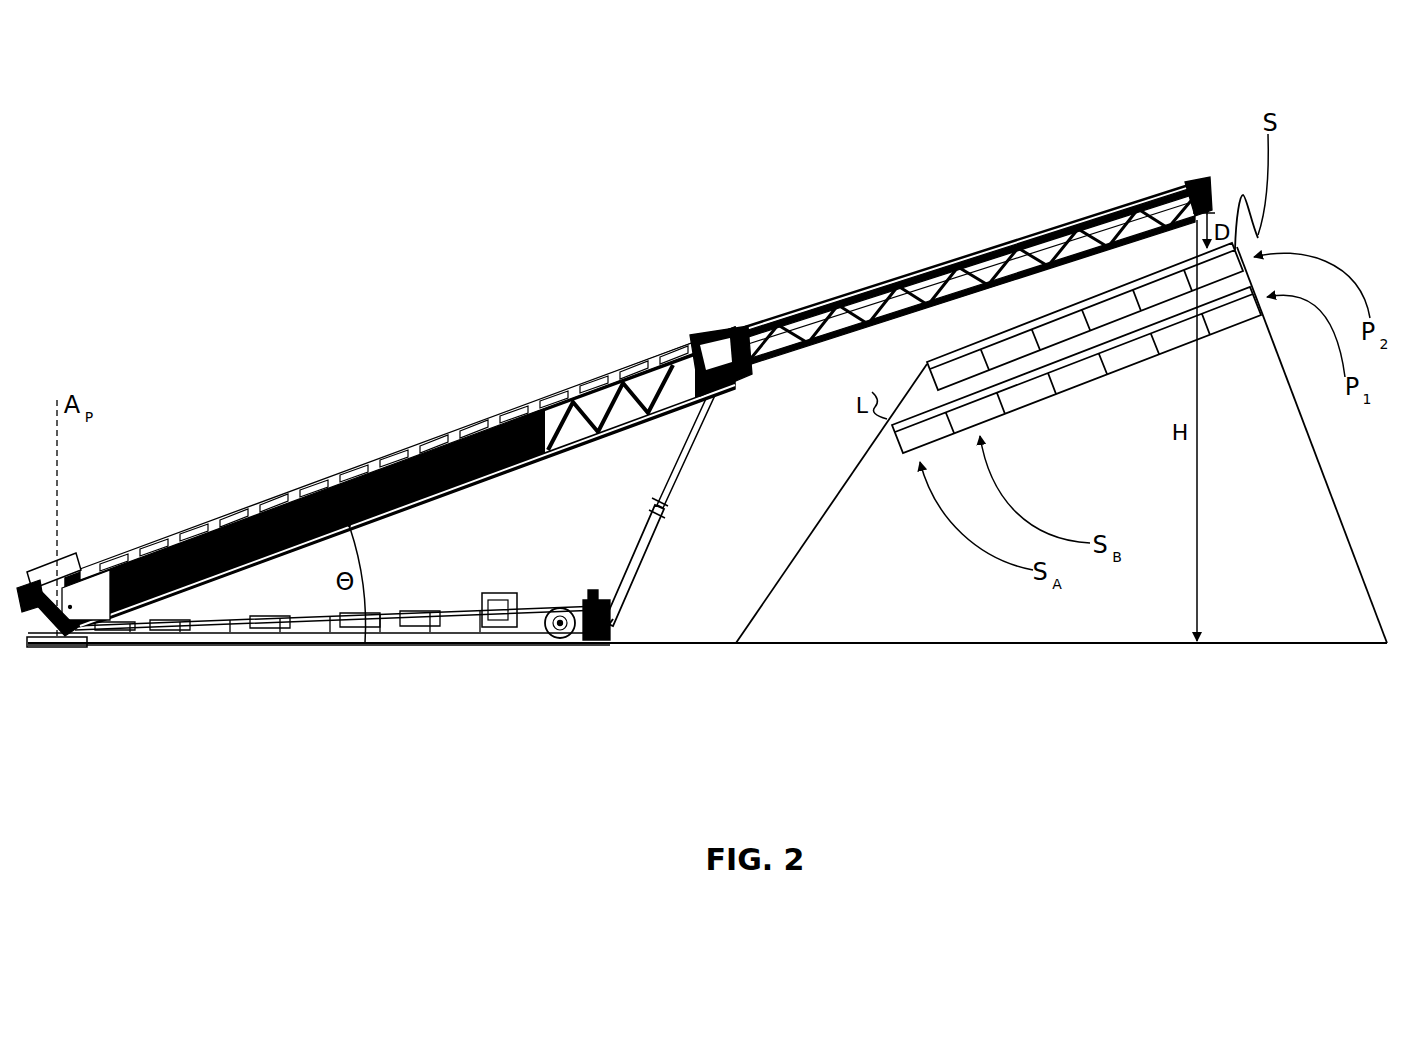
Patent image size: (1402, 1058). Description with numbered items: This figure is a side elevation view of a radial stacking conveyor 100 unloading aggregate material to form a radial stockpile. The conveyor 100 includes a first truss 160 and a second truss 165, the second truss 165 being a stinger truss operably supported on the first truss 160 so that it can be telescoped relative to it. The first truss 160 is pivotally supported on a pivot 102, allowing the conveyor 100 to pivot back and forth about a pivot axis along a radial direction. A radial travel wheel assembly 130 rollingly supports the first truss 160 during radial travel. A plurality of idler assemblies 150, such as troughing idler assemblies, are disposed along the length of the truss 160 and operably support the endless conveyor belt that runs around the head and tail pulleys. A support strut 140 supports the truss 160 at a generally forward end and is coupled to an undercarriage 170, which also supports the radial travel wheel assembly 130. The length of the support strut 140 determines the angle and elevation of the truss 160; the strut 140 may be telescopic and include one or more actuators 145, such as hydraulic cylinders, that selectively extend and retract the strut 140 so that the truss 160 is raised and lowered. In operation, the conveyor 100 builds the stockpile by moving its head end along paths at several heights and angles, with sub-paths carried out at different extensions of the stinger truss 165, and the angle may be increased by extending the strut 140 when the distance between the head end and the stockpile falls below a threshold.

The radial stacking conveyor 100 is at (95, 162).
The pivot 102 is at (55, 650).
The radial travel wheel assembly 130 is at (590, 585).
The support strut 140 is at (683, 482).
The actuator 145 is at (715, 553).
The idler assembly 150 is at (982, 247).
The first truss 160 is at (246, 495).
The second truss 165 is at (823, 310).
The undercarriage 170 is at (283, 657).